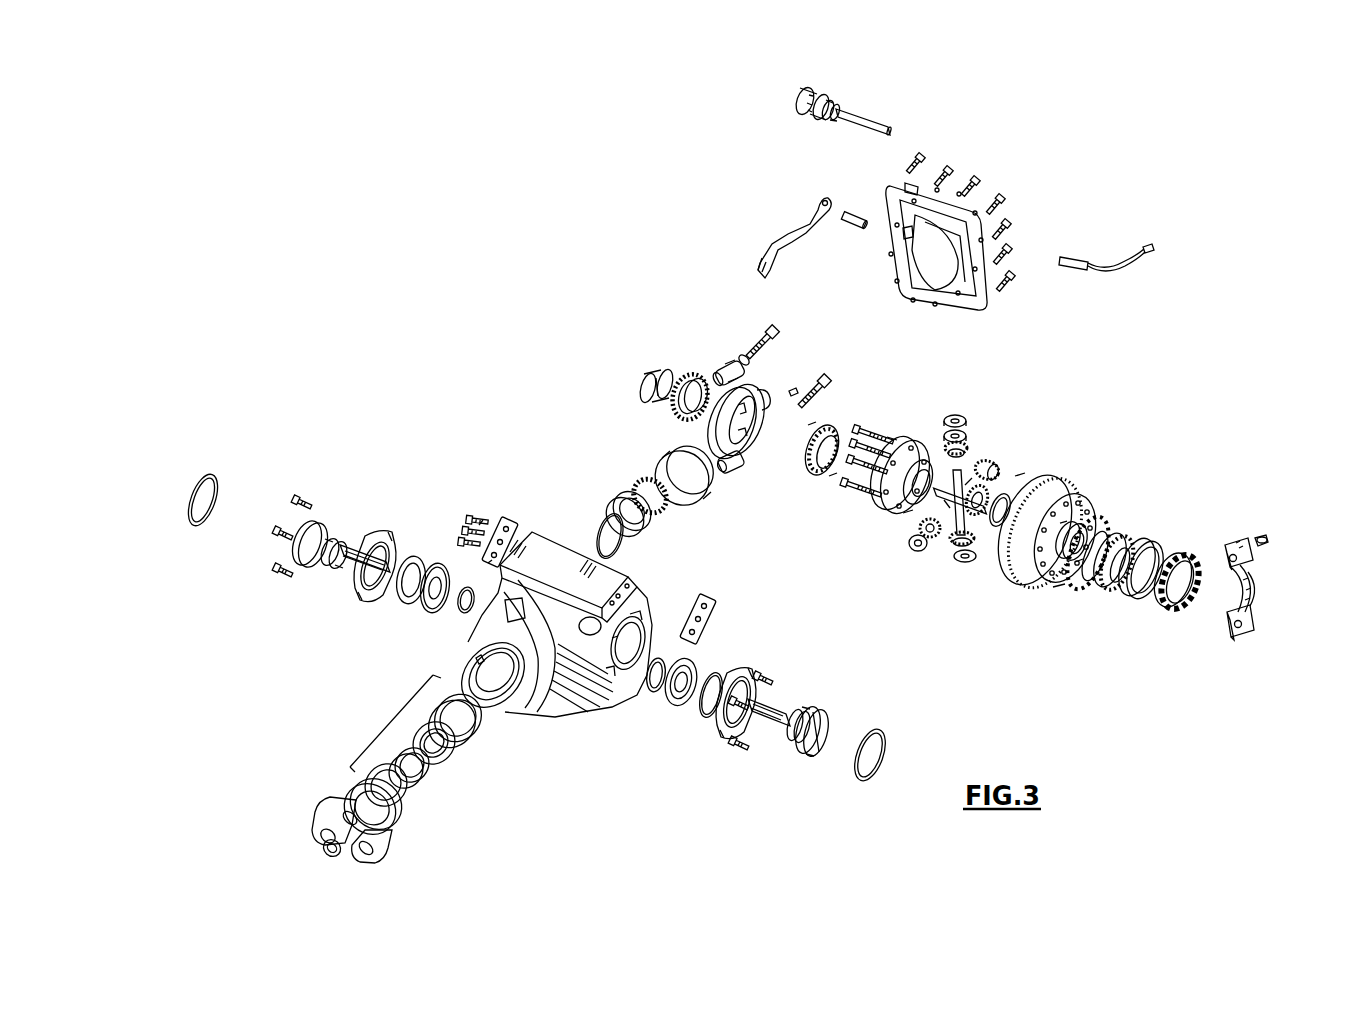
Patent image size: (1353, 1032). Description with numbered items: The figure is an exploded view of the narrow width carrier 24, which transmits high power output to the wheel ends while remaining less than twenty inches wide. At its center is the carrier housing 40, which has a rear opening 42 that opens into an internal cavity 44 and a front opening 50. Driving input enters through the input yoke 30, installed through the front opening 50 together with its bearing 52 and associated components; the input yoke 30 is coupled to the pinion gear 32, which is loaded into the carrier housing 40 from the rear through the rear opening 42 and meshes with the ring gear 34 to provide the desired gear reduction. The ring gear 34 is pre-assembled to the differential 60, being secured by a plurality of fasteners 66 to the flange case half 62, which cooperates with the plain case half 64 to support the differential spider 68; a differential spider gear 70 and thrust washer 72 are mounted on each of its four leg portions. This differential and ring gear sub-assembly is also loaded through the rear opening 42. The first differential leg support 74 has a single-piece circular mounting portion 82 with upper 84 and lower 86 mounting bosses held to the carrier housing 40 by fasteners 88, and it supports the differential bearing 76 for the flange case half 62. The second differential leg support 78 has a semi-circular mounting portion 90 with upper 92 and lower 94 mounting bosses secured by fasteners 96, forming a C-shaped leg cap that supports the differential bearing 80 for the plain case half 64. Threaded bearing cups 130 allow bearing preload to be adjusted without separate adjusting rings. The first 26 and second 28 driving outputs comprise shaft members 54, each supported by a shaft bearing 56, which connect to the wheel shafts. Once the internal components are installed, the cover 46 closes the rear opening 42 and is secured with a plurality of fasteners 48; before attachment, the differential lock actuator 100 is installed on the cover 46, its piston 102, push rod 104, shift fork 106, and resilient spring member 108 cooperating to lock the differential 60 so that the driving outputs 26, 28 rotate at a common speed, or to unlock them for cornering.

The carrier 24 is at (566, 390).
The first driving output 26 is at (830, 724).
The second driving output 28 is at (316, 525).
The input yoke 30 is at (398, 828).
The pinion gear 32 is at (688, 508).
The ring gear 34 is at (1050, 476).
The carrier housing 40 is at (582, 651).
The rear opening 42 is at (581, 542).
The internal cavity 44 is at (634, 623).
The cover 46 is at (969, 312).
The fasteners 48 is at (1016, 219).
The front opening 50 is at (497, 685).
The bearing 52 is at (386, 718).
The shaft members 54 is at (343, 563).
The shaft bearing 56 is at (428, 548).
The differential 60 is at (944, 598).
The flange case half 62 is at (1089, 497).
The plain case half 64 is at (912, 448).
The fasteners 66 is at (1091, 593).
The differential spider 68 is at (960, 478).
The differential spider gear 70 is at (963, 440).
The thrust washer 72 is at (950, 414).
The first differential leg support 74 is at (701, 361).
The differential bearing 76 is at (1139, 545).
The second differential leg support 78 is at (1269, 527).
The differential bearing 80 is at (825, 425).
The circular mounting portion 82 is at (718, 444).
The upper mounting boss 84 is at (737, 363).
The lower mounting boss 86 is at (742, 476).
The fasteners 88 is at (767, 362).
The semi-circular mounting portion 90 is at (1258, 604).
The upper mounting boss 92 is at (1246, 540).
The lower mounting boss 94 is at (1238, 640).
The fasteners 96 is at (817, 366).
The differential lock actuator 100 is at (887, 108).
The piston 102 is at (815, 86).
The push rod 104 is at (862, 131).
The shift fork 106 is at (786, 231).
The resilient spring member 108 is at (853, 236).
The threaded bearing cups 130 is at (668, 406).